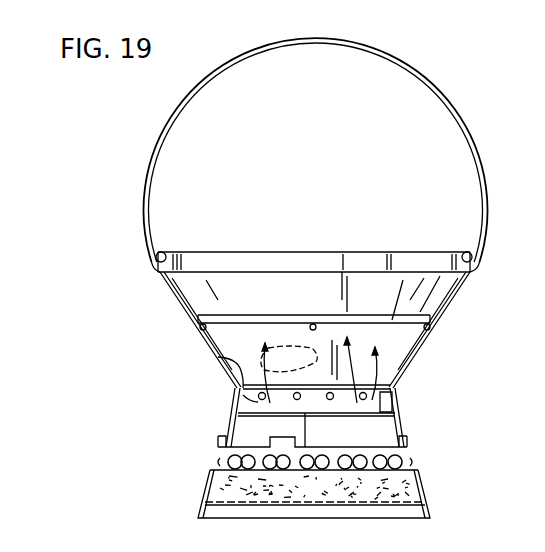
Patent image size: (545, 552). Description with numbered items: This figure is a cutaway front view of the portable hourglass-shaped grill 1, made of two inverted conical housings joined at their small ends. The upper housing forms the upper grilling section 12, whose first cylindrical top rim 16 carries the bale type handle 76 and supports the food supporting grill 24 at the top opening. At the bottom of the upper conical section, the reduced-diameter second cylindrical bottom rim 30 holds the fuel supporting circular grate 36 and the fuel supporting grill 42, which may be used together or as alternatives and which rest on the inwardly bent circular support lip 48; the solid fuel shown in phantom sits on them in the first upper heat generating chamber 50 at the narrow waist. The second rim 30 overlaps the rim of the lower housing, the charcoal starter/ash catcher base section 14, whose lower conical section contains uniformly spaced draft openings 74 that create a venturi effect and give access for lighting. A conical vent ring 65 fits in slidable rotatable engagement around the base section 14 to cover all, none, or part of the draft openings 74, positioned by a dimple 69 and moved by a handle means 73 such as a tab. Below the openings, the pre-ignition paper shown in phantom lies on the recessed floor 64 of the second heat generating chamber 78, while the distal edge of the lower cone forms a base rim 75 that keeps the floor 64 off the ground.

The lighting fixture 1 is at (333, 282).
The upper grilling section 12 is at (448, 316).
The charcoal starter/ash catcher base section 14 is at (404, 424).
The first cylindrical top rim 16 is at (301, 252).
The food supporting grill 24 is at (392, 322).
The second cylindrical bottom rim 30 is at (230, 405).
The fuel supporting circular grate 36 is at (218, 426).
The fuel supporting grill 42 is at (240, 397).
The circular support lip 48 is at (216, 355).
The first upper heat generating chamber 50 is at (319, 360).
The floor 64 is at (425, 507).
The vent ring 65 is at (413, 462).
The dimple 69 is at (218, 438).
The handle means 73 is at (225, 476).
The draft openings 74 is at (232, 470).
The base rim 75 is at (420, 523).
The bale type handle 76 is at (436, 97).
The second heat generating chamber 78 is at (319, 442).